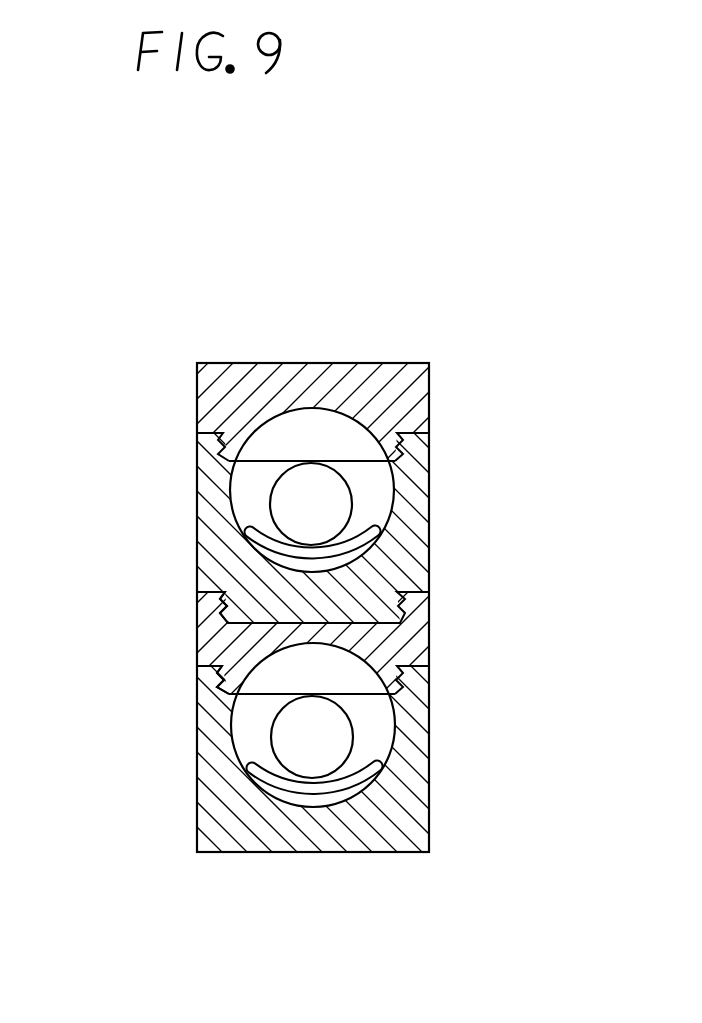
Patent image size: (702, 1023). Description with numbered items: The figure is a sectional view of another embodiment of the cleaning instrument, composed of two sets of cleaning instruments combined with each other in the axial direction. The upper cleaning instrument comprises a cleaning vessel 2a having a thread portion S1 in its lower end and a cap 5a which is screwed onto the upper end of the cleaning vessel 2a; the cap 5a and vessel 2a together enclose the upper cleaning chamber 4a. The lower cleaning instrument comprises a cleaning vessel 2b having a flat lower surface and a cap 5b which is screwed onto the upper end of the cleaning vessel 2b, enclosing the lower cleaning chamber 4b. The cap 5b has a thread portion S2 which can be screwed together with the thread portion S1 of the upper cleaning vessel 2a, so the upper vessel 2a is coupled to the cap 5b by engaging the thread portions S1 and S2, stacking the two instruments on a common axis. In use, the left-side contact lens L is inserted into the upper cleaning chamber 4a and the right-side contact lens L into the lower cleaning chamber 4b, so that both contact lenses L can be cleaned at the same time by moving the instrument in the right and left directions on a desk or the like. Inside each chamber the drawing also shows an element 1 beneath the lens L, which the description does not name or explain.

The ball 1 is at (343, 490).
The cleaning vessel 2a is at (227, 557).
The cleaning vessel 2b is at (230, 820).
The cleaning chamber 4a is at (242, 490).
The cleaning chamber 4b is at (245, 722).
The cap 5a is at (417, 412).
The cap 5b is at (412, 632).
The contact lens L is at (355, 547).
The thread portion S1 is at (238, 617).
The thread portion S2 is at (238, 646).